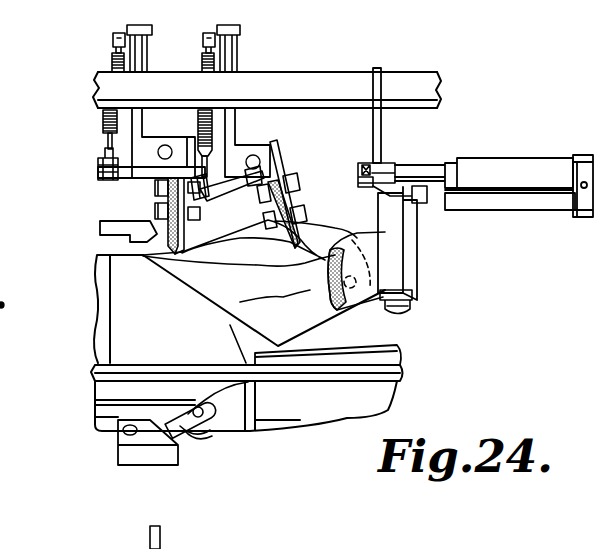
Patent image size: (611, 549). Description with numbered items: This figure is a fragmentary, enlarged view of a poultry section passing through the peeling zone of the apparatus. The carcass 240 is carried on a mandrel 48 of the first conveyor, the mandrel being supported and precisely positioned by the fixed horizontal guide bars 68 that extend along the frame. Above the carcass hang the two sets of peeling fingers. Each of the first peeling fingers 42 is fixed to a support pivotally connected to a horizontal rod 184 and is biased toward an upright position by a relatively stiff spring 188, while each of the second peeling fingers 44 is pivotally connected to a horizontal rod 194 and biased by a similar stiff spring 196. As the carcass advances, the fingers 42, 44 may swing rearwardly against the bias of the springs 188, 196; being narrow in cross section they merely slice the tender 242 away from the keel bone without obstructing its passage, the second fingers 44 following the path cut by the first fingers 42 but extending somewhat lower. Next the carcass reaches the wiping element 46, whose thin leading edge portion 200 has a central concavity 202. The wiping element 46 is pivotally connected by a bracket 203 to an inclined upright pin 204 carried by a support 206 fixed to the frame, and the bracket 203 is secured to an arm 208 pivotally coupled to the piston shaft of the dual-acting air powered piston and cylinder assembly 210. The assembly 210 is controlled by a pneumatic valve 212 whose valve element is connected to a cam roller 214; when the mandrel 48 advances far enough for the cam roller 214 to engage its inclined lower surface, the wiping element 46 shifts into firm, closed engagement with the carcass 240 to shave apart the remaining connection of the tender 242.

The first peeling fingers 42 is at (165, 257).
The second peeling fingers 44 is at (300, 222).
The wiping elements 46 is at (337, 305).
The mandrels 48 is at (90, 266).
The horizontal guide bars 68 is at (403, 371).
The horizontal rod 184 is at (168, 145).
The spring 188 is at (103, 123).
The horizontal rod 194 is at (252, 155).
The spring 196 is at (205, 120).
The leading edge portion 200 is at (330, 290).
The central concavity 202 is at (328, 268).
The bracket 203 is at (417, 238).
The upright pin 204 is at (405, 318).
The support 206 is at (382, 132).
The arm 208 is at (362, 163).
The piston and cylinder assembly 210 is at (510, 145).
The pneumatic valve 212 is at (118, 453).
The cam roller 214 is at (203, 430).
The carcass 240 is at (190, 305).
The tender 242 is at (227, 257).